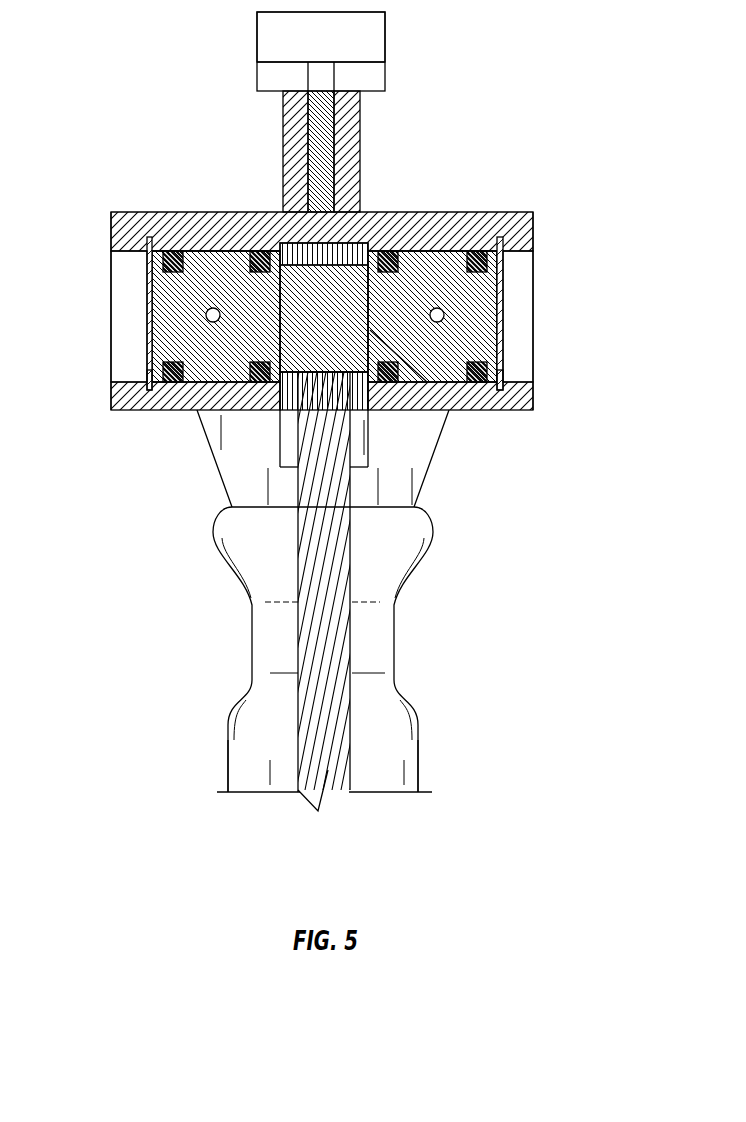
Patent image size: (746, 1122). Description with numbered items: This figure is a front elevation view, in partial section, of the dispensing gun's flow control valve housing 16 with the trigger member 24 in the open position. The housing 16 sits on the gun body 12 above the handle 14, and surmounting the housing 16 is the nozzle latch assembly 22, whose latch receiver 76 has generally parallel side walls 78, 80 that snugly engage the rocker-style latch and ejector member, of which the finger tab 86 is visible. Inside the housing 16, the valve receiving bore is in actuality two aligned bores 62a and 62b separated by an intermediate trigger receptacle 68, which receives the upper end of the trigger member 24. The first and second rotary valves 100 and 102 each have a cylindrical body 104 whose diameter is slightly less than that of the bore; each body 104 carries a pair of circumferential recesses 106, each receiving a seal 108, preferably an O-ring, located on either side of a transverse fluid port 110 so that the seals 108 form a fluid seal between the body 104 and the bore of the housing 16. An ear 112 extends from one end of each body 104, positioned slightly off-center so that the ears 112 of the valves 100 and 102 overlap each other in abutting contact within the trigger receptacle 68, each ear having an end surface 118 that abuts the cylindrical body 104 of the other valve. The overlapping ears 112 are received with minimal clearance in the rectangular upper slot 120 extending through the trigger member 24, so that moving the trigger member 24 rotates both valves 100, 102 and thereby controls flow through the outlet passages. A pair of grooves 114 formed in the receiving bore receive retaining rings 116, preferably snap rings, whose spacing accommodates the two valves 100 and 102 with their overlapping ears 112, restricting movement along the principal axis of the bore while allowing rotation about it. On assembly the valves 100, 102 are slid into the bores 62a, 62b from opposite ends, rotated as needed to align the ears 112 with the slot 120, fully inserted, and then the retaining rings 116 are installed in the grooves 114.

The gun body 12 is at (436, 550).
The handle 14 is at (237, 752).
The flow control valve housing 16 is at (188, 250).
The nozzle latch assembly 22 is at (329, 48).
The trigger member 24 is at (328, 638).
The first aligned bore 62a is at (128, 275).
The second aligned bore 62b is at (518, 265).
The trigger receptacle 68 is at (338, 262).
The latch receiver 76 is at (326, 151).
The side wall 78 is at (360, 158).
The side wall 80 is at (287, 148).
The finger tab 86 is at (263, 42).
The first rotary valve 100 is at (473, 337).
The second rotary valve 102 is at (175, 341).
The cylindrical body 104 is at (222, 372).
The circumferential recess 106 is at (170, 265).
The seal 108 is at (258, 252).
The transverse fluid port 110 is at (210, 306).
The ear 112 is at (318, 332).
The groove 114 is at (150, 238).
The retaining ring 116 is at (150, 380).
The end surface 118 is at (427, 382).
The upper slot 120 is at (352, 243).